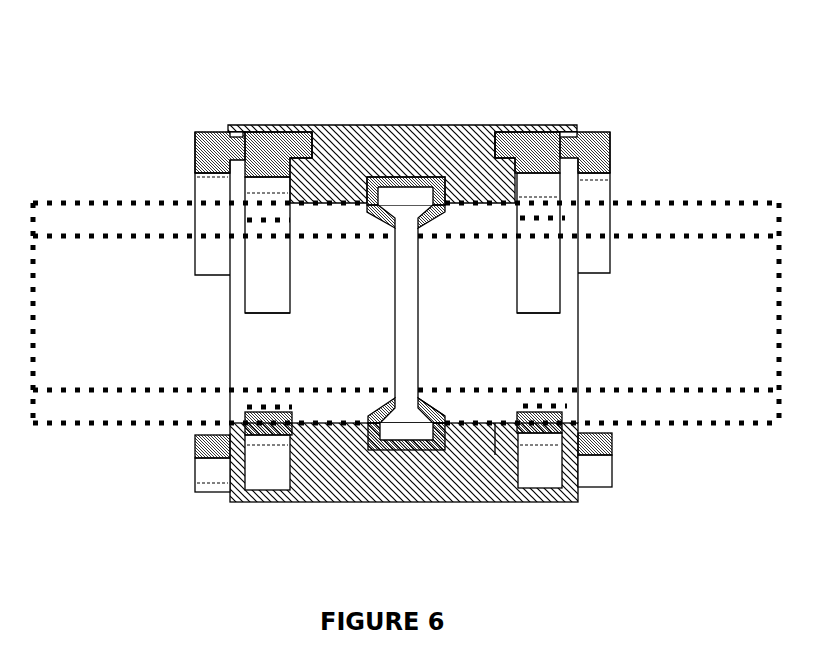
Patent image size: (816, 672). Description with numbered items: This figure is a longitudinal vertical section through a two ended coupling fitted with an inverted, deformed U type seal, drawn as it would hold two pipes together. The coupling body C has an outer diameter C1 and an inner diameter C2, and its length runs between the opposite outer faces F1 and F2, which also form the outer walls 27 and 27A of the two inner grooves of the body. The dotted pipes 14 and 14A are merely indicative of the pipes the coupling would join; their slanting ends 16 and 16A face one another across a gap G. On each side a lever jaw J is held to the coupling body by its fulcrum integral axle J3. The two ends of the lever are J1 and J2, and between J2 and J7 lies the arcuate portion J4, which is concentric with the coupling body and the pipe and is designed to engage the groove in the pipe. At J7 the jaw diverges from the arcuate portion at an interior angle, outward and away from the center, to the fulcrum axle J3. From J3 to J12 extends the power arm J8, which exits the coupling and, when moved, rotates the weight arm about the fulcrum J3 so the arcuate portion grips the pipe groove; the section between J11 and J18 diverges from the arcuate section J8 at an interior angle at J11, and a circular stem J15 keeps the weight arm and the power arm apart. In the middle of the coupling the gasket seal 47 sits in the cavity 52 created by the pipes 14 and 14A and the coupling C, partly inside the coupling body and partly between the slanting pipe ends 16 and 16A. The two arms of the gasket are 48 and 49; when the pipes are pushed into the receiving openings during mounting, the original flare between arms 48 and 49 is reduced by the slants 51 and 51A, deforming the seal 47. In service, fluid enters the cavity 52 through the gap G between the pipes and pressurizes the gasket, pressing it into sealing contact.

The pipe 14 is at (47, 203).
The pipe 14A is at (750, 203).
The outer wall 27 is at (230, 396).
The outer wall 27A is at (580, 370).
The outer face F1 is at (230, 370).
The outer face F2 is at (580, 403).
The coupling body C is at (313, 132).
The outer diameter C1 is at (347, 130).
The inner diameter C2 is at (468, 200).
The lever jaw J is at (281, 132).
The lever end J1 is at (243, 132).
The lever end J2 is at (268, 317).
The fulcrum integral axle J3 is at (300, 132).
The arcuate portion J4 is at (293, 227).
The divergence point J7 is at (260, 193).
The power arm J8 is at (193, 217).
The divergence point J11 is at (195, 193).
The power arm end J12 is at (207, 275).
The circular stem J15 is at (243, 135).
The power arm section end J18 is at (195, 150).
The gasket seal 47 is at (363, 130).
The gasket arm 48 is at (393, 410).
The gasket arm 49 is at (433, 414).
The slant 51 is at (377, 210).
The slant 51A is at (434, 213).
The cavity 52 is at (400, 487).
The slanting end 16 is at (383, 410).
The slanting end 16A is at (440, 403).
The gap G is at (405, 270).